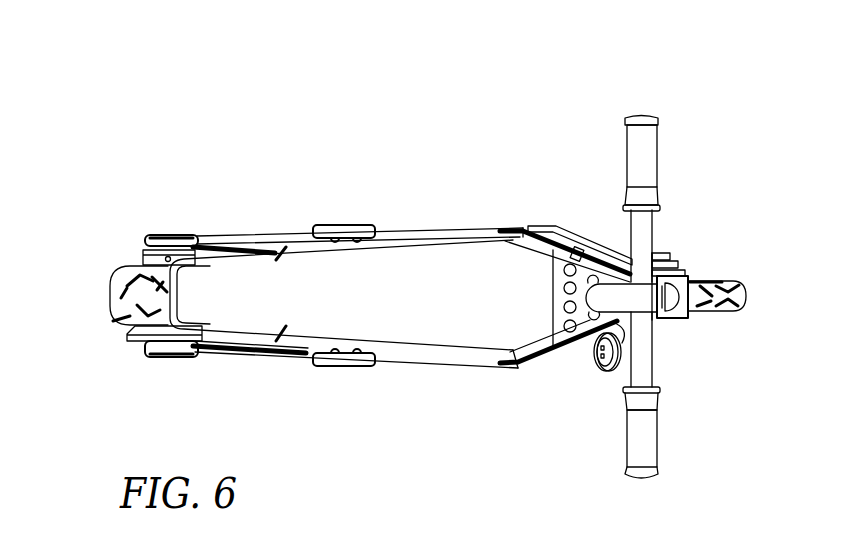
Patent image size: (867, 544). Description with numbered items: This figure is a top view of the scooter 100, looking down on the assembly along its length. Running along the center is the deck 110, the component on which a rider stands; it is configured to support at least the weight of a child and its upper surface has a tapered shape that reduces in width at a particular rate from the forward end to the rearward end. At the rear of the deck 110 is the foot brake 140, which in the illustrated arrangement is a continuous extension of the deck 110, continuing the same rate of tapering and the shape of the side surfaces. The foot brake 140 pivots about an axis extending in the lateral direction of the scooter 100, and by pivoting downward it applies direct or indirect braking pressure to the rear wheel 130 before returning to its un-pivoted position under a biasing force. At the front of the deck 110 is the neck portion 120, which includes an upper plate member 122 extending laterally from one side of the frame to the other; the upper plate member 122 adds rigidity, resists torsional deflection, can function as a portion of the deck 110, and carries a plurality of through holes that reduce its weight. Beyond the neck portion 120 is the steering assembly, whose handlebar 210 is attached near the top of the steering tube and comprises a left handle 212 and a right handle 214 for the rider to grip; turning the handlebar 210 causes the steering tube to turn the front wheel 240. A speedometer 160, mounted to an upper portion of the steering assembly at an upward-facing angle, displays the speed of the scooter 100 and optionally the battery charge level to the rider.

The scooter 100 is at (182, 86).
The deck 110 is at (453, 275).
The neck portion 120 is at (583, 272).
The upper plate member 122 is at (560, 287).
The rear wheel 130 is at (128, 298).
The foot brake 140 is at (229, 287).
The speedometer 160 is at (622, 353).
The handlebar 210 is at (648, 247).
The left handle 212 is at (645, 158).
The right handle 214 is at (645, 433).
The front wheel 240 is at (743, 292).